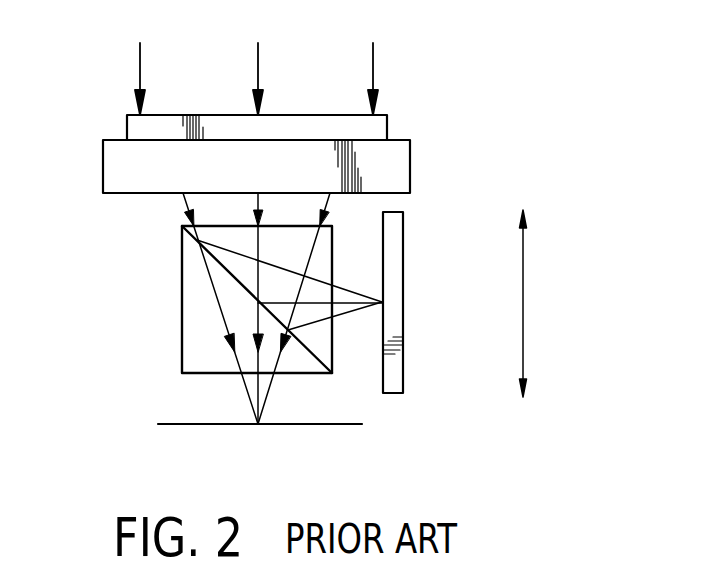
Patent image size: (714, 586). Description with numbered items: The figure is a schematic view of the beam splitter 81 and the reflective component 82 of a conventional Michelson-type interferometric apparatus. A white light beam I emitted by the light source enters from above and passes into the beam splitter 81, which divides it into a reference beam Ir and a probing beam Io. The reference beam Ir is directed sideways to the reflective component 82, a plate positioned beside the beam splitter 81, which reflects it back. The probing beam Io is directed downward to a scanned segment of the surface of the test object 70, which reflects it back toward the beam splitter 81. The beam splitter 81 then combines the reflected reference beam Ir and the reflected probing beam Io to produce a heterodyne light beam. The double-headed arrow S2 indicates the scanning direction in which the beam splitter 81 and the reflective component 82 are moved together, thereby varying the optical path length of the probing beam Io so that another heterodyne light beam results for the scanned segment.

The white light beam I is at (257, 70).
The reference beam Ir is at (345, 303).
The probing beam Io is at (258, 390).
The beam splitter 81 is at (182, 280).
The reflective component 82 is at (403, 270).
The test object 70 is at (310, 425).
The scanning direction S2 is at (523, 303).